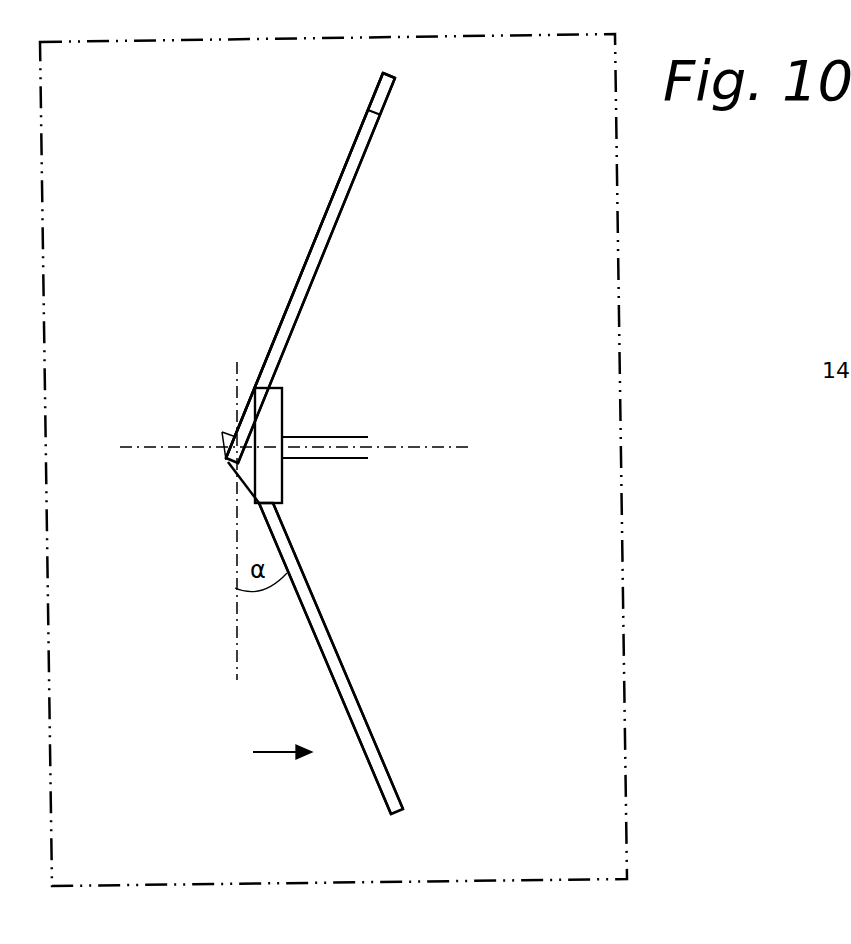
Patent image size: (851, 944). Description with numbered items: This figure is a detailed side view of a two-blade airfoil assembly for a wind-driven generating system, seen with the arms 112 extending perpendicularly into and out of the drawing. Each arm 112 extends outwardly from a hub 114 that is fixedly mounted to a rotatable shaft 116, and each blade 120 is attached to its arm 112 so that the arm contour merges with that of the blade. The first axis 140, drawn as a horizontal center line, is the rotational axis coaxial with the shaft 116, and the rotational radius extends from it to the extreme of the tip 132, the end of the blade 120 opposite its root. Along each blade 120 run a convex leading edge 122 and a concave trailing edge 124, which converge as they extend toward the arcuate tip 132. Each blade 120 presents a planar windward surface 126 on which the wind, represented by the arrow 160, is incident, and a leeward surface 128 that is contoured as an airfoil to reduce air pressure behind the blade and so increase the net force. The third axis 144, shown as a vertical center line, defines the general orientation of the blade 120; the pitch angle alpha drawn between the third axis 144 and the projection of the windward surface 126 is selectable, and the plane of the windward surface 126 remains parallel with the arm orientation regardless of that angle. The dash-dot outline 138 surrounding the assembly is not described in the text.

The arm 112 is at (257, 457).
The hub 114 is at (275, 473).
The rotatable shaft 116 is at (342, 438).
The blade 120 is at (345, 165).
The leading edge 122 is at (296, 296).
The trailing edge 124 is at (352, 702).
The windward surface 126 is at (315, 246).
The leeward surface 128 is at (352, 200).
The tip 132 is at (395, 83).
The housing boundary 138 is at (553, 585).
The first axis 140 is at (397, 442).
The third axis 144 is at (238, 632).
The arrows 160 is at (246, 752).